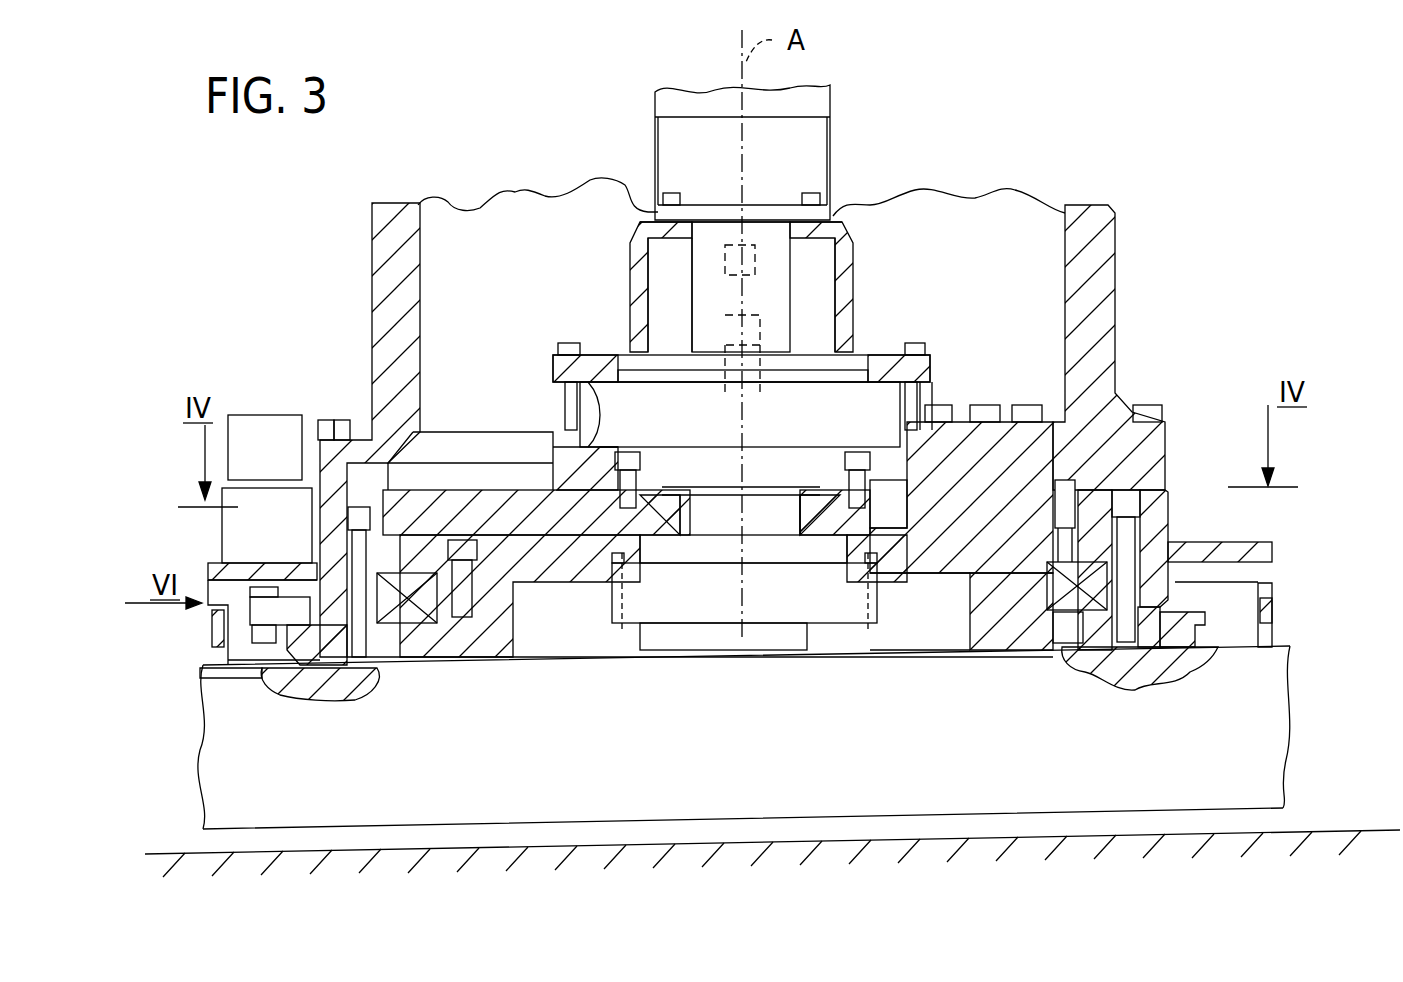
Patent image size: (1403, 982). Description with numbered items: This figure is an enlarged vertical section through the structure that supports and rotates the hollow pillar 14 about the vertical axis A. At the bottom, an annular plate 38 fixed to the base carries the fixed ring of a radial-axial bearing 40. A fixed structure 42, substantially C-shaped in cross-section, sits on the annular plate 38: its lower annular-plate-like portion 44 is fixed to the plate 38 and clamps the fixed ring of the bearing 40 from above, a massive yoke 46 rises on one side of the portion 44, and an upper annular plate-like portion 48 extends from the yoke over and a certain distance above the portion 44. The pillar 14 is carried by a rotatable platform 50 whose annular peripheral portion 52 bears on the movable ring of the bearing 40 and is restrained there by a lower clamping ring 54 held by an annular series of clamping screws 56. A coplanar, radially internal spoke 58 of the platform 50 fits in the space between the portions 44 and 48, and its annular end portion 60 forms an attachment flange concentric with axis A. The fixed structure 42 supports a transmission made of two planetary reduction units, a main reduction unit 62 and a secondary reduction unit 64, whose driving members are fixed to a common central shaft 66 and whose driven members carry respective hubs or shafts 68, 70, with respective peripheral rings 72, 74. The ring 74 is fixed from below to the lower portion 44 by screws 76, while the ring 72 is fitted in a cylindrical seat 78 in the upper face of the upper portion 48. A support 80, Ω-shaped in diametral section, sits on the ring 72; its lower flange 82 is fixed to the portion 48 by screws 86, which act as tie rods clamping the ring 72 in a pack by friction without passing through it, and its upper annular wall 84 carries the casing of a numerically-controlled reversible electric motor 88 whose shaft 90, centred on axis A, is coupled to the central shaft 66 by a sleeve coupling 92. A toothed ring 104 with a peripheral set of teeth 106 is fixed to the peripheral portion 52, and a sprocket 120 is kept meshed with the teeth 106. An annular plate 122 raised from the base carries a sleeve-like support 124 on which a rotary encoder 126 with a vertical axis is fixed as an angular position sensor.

The hollow pillar 14 is at (1100, 258).
The annular plate 38 is at (465, 660).
The radial-axial bearing 40 is at (1040, 610).
The fixed structure 42 is at (940, 576).
The lower annular-plate-like portion 44 is at (560, 585).
The massive yoke 46 is at (1030, 420).
The upper annular plate-like portion 48 is at (555, 458).
The rotatable platform 50 is at (1170, 490).
The annular peripheral portion 52 is at (1155, 536).
The lower clamping ring 54 is at (1100, 630).
The clamping screws 56 is at (1130, 650).
The spoke 58 is at (438, 512).
The annular end portion 60 is at (945, 430).
The main reduction unit 62 is at (855, 328).
The secondary reduction unit 64 is at (832, 626).
The central shaft 66 is at (747, 520).
The hub or shaft 68 is at (678, 465).
The hub or shaft 70 is at (700, 575).
The peripheral ring 72 is at (905, 385).
The peripheral ring 74 is at (648, 640).
The screws 76 is at (622, 560).
The cylindrical seat 78 is at (598, 365).
The support 80 is at (858, 265).
The lower flange 82 is at (898, 358).
The upper annular wall 84 is at (835, 218).
The screws 86 is at (560, 405).
The electric motor 88 is at (815, 145).
The motor shaft 90 is at (755, 264).
The sleeve coupling 92 is at (705, 268).
The toothed ring 104 is at (287, 674).
The set of teeth 106 is at (240, 675).
The sprocket 120 is at (212, 636).
The annular plate 122 is at (1272, 553).
The sleeve-like support 124 is at (240, 525).
The rotary encoder 126 is at (240, 418).